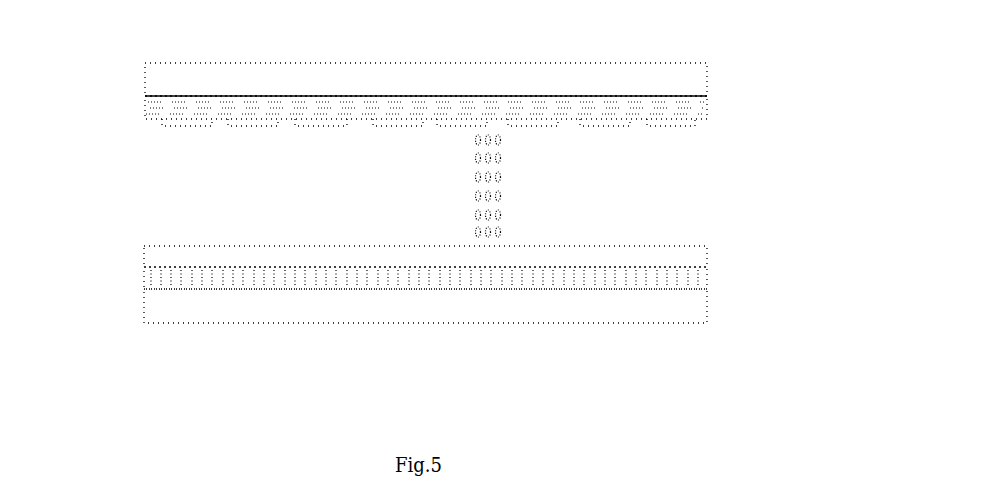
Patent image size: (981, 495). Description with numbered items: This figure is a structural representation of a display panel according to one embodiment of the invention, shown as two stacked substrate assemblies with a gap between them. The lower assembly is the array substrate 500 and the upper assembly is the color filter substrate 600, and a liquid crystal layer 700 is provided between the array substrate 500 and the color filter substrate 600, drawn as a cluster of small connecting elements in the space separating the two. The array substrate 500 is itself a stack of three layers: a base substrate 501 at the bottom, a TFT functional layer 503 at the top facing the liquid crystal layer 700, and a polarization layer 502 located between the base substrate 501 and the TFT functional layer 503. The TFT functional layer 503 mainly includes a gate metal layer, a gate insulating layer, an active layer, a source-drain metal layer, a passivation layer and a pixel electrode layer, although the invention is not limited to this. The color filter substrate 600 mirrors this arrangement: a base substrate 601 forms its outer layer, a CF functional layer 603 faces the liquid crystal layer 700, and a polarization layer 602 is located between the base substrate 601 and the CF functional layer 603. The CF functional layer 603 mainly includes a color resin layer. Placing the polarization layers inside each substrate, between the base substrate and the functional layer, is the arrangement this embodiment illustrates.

The array substrate 500 is at (436, 291).
The base substrate 501 is at (678, 302).
The polarization layer 502 is at (708, 282).
The TFT functional layer 503 is at (708, 250).
The color filter substrate 600 is at (419, 102).
The base substrate 601 is at (702, 76).
The polarization layer 602 is at (708, 113).
The CF functional layer 603 is at (676, 122).
The liquid crystal layer 700 is at (499, 180).